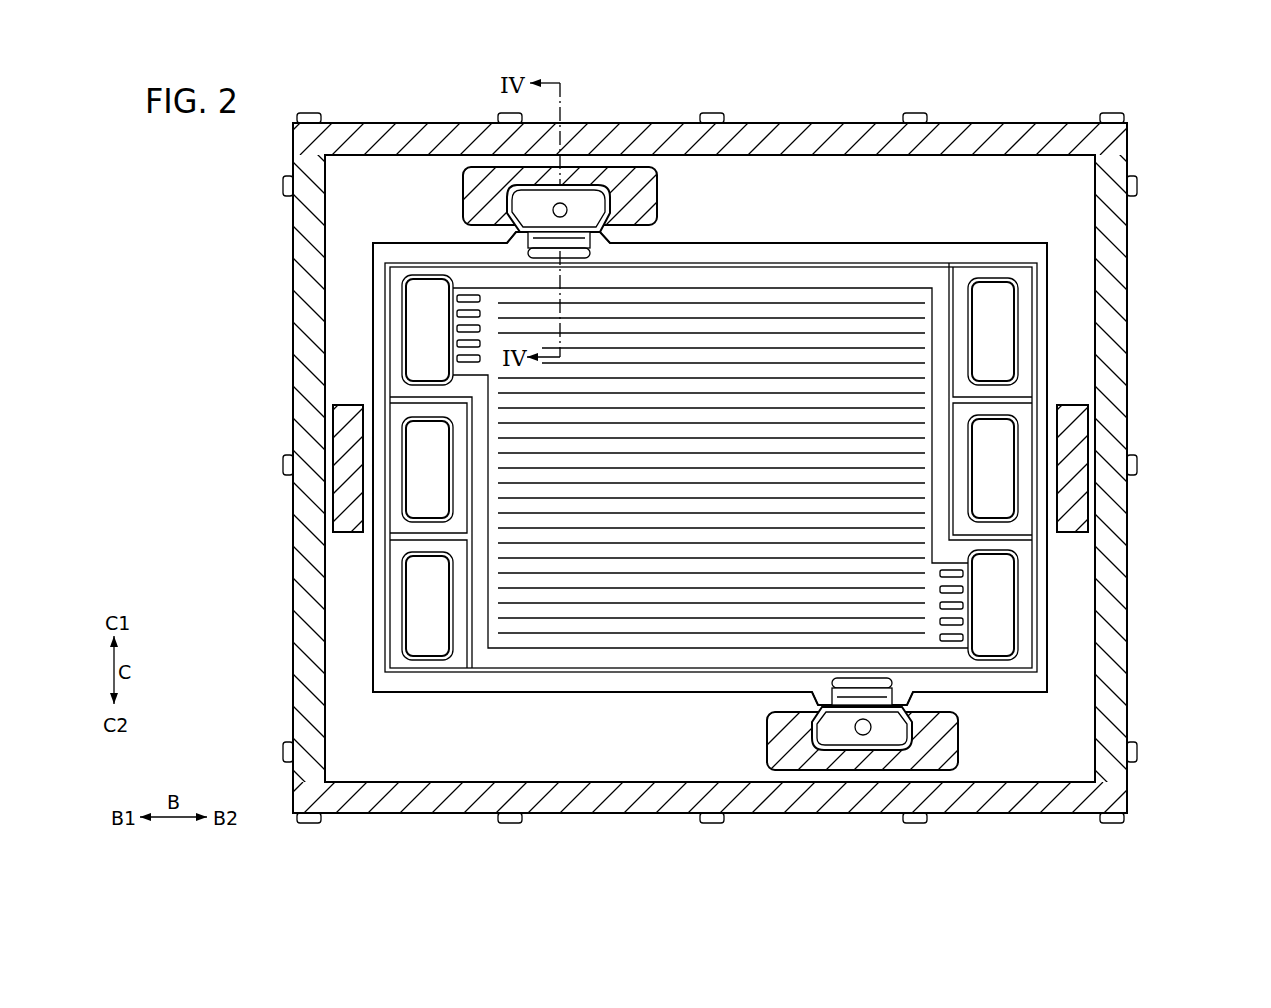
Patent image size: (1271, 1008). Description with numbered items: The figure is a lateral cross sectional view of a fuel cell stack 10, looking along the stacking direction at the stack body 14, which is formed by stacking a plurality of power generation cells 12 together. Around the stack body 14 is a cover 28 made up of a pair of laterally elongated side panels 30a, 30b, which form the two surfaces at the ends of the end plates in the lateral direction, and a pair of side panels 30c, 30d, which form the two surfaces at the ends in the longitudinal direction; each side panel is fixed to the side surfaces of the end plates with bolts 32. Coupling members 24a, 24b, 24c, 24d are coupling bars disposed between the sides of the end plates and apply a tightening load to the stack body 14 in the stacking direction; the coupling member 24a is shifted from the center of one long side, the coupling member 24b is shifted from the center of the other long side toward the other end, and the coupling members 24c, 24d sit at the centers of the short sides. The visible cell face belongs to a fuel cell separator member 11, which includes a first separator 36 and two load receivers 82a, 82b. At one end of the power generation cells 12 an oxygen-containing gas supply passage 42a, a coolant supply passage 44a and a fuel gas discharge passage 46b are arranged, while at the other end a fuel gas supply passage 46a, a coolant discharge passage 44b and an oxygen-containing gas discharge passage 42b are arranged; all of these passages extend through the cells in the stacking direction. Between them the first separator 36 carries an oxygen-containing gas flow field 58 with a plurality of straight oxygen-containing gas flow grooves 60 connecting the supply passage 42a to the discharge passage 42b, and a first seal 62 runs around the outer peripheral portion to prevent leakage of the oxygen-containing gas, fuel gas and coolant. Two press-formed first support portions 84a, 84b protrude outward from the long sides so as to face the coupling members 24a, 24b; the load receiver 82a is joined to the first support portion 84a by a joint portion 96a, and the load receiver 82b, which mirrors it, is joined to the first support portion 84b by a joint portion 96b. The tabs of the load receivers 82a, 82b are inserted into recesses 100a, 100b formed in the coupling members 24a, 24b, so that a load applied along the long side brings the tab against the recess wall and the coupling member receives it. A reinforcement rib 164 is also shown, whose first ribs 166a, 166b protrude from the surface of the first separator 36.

The fuel cell stack 10 is at (228, 151).
The fuel cell separator member 11 is at (715, 435).
The power generation cell 12 is at (710, 440).
The stack body 14 is at (938, 241).
The coupling member 24a is at (475, 167).
The coupling member 24b is at (785, 755).
The coupling member 24c is at (347, 495).
The coupling member 24d is at (1068, 489).
The cover 28 is at (714, 463).
The side panel 30a is at (1003, 131).
The side panel 30b is at (457, 804).
The side panel 30c is at (305, 642).
The side panel 30d is at (1115, 630).
The bolt 32 is at (308, 112).
The first separator 36 is at (1015, 248).
The oxygen-containing gas supply passage 42a is at (420, 318).
The oxygen-containing gas discharge passage 42b is at (997, 600).
The coolant supply passage 44a is at (420, 445).
The coolant discharge passage 44b is at (997, 445).
The fuel gas supply passage 46a is at (997, 322).
The fuel gas discharge passage 46b is at (420, 620).
The oxygen-containing gas flow field 58 is at (714, 417).
The oxygen-containing gas flow groove 60 is at (862, 300).
The first seal 62 is at (710, 409).
The load receiver 82a is at (595, 197).
The load receiver 82b is at (907, 733).
The first support portion 84a is at (610, 233).
The first support portion 84b is at (813, 695).
The joint portion 96a is at (513, 215).
The joint portion 96b is at (872, 692).
The recess 100a is at (553, 201).
The recess 100b is at (918, 752).
The reinforcement rib 164 is at (578, 250).
The first rib 166a is at (633, 169).
The first rib 166b is at (847, 685).